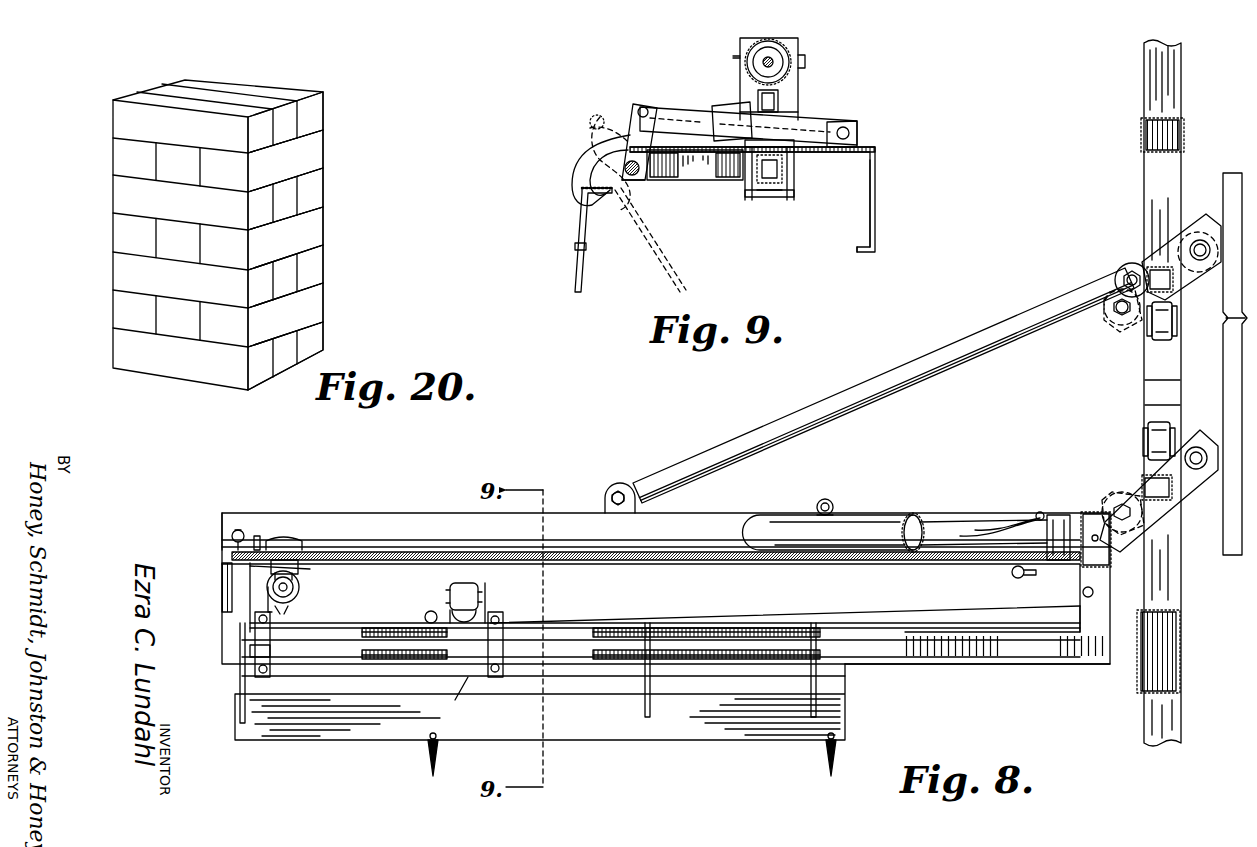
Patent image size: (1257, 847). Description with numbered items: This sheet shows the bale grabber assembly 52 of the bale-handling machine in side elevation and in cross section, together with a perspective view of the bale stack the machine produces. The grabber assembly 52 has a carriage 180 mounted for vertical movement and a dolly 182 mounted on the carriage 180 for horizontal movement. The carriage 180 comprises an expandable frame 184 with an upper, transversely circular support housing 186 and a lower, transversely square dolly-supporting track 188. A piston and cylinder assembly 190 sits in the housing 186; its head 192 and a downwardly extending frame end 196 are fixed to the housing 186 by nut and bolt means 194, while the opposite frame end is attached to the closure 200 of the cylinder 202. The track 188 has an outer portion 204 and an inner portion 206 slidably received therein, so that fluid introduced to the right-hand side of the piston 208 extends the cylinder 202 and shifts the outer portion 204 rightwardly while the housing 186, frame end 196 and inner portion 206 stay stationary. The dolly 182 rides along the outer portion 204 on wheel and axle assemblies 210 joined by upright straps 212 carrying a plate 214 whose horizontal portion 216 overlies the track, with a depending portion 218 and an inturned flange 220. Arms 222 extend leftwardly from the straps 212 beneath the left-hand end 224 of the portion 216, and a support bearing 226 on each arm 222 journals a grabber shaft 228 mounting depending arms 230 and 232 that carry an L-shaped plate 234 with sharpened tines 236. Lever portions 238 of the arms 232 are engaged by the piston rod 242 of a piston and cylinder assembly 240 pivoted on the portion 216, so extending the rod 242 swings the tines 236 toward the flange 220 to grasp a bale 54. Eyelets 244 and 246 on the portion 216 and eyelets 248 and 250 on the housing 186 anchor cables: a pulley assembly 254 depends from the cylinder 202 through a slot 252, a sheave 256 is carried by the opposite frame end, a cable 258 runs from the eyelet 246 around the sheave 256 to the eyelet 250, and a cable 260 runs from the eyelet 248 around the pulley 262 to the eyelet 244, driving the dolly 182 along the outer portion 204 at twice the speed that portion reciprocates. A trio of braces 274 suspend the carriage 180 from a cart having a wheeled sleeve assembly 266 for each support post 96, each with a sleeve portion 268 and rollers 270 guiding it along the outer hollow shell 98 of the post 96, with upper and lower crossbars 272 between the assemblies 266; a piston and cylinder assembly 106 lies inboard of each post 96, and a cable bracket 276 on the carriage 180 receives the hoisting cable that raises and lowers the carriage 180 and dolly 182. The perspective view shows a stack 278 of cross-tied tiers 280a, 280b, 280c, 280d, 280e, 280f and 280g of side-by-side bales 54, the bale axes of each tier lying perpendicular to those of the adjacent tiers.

In FIG. 8, the bale grabber assembly 52 is at (420, 508).
In FIG. 20, the hay bale 54 is at (92, 104).
In FIG. 8, the support post 96 is at (1180, 660).
In FIG. 8, the outer hollow shell 98 is at (1170, 586).
In FIG. 8, the piston and cylinder assembly 106 is at (1232, 175).
In FIG. 8, the carriage 180 is at (952, 342).
In FIG. 8, the dolly 182 is at (236, 742).
In FIG. 8, the expandable frame 184 is at (603, 502).
In FIG. 9, the support housing 186 is at (783, 40).
In FIG. 8, the support housing 186 is at (330, 520).
In FIG. 8, the dolly-supporting track 188 is at (922, 668).
In FIG. 8, the piston and cylinder assembly 190 is at (257, 534).
In FIG. 8, the head 192 is at (222, 542).
In FIG. 9, the nut and bolt means 194 is at (736, 64).
In FIG. 8, the nut and bolt means 194 is at (235, 530).
In FIG. 8, the frame end 196 is at (226, 600).
In FIG. 8, the closure 200 is at (1097, 513).
In FIG. 8, the cylinder 202 is at (290, 537).
In FIG. 9, the outer portion 204 is at (783, 170).
In FIG. 8, the outer portion 204 is at (866, 664).
In FIG. 9, the inner portion 206 is at (747, 197).
In FIG. 8, the piston 208 is at (1083, 592).
In FIG. 9, the wheel and axle assemblies 210 is at (775, 132).
In FIG. 8, the wheel and axle assemblies 210 is at (300, 612).
In FIG. 9, the upright straps 212 is at (795, 162).
In FIG. 8, the upright straps 212 is at (254, 628).
In FIG. 9, the plate 214 is at (880, 176).
In FIG. 9, the horizontal portion 216 is at (858, 136).
In FIG. 9, the depending portion 218 is at (877, 211).
In FIG. 9, the inturned flange 220 is at (868, 252).
In FIG. 9, the arms 222 is at (664, 128).
In FIG. 8, the arms 222 is at (252, 666).
In FIG. 9, the left-hand end 224 is at (700, 112).
In FIG. 8, the support bearing 226 is at (246, 648).
In FIG. 9, the grabber shaft 228 is at (640, 178).
In FIG. 8, the grabber shaft 228 is at (610, 622).
In FIG. 8, the arms 230 is at (240, 715).
In FIG. 9, the arms 232 is at (600, 163).
In FIG. 8, the arms 232 is at (466, 700).
In FIG. 9, the L-shaped plate 234 is at (578, 222).
In FIG. 9, the sharpened tines 236 is at (584, 262).
In FIG. 8, the sharpened tines 236 is at (427, 760).
In FIG. 9, the lever portions 238 is at (634, 152).
In FIG. 8, the lever portions 238 is at (446, 592).
In FIG. 9, the piston and cylinder assembly 240 is at (779, 100).
In FIG. 9, the piston rod 242 is at (644, 106).
In FIG. 8, the eyelet 244 is at (340, 625).
In FIG. 8, the eyelet 246 is at (449, 611).
In FIG. 8, the eyelet 248 is at (1038, 512).
In FIG. 8, the eyelet 250 is at (1012, 575).
In FIG. 8, the slot 252 is at (340, 552).
In FIG. 8, the pulley assembly 254 is at (250, 569).
In FIG. 8, the sheave 256 is at (1076, 626).
In FIG. 8, the cable 258 is at (846, 614).
In FIG. 8, the cable 260 is at (676, 551).
In FIG. 9, the pulley 262 is at (797, 70).
In FIG. 8, the pulley 262 is at (299, 591).
In FIG. 8, the wheeled sleeve assembly 266 is at (1145, 384).
In FIG. 8, the sleeve portion 268 is at (1145, 407).
In FIG. 8, the rollers 270 is at (1212, 223).
In FIG. 8, the crossbars 272 is at (1160, 264).
In FIG. 8, the braces 274 is at (790, 417).
In FIG. 8, the cable bracket 276 is at (824, 499).
In FIG. 20, the stack 278 is at (110, 193).
In FIG. 20, the tier 280a is at (328, 330).
In FIG. 20, the tier 280b is at (328, 294).
In FIG. 20, the tier 280c is at (328, 259).
In FIG. 20, the tier 280d is at (328, 225).
In FIG. 20, the tier 280e is at (328, 190).
In FIG. 20, the tier 280f is at (328, 155).
In FIG. 20, the tier 280g is at (328, 118).